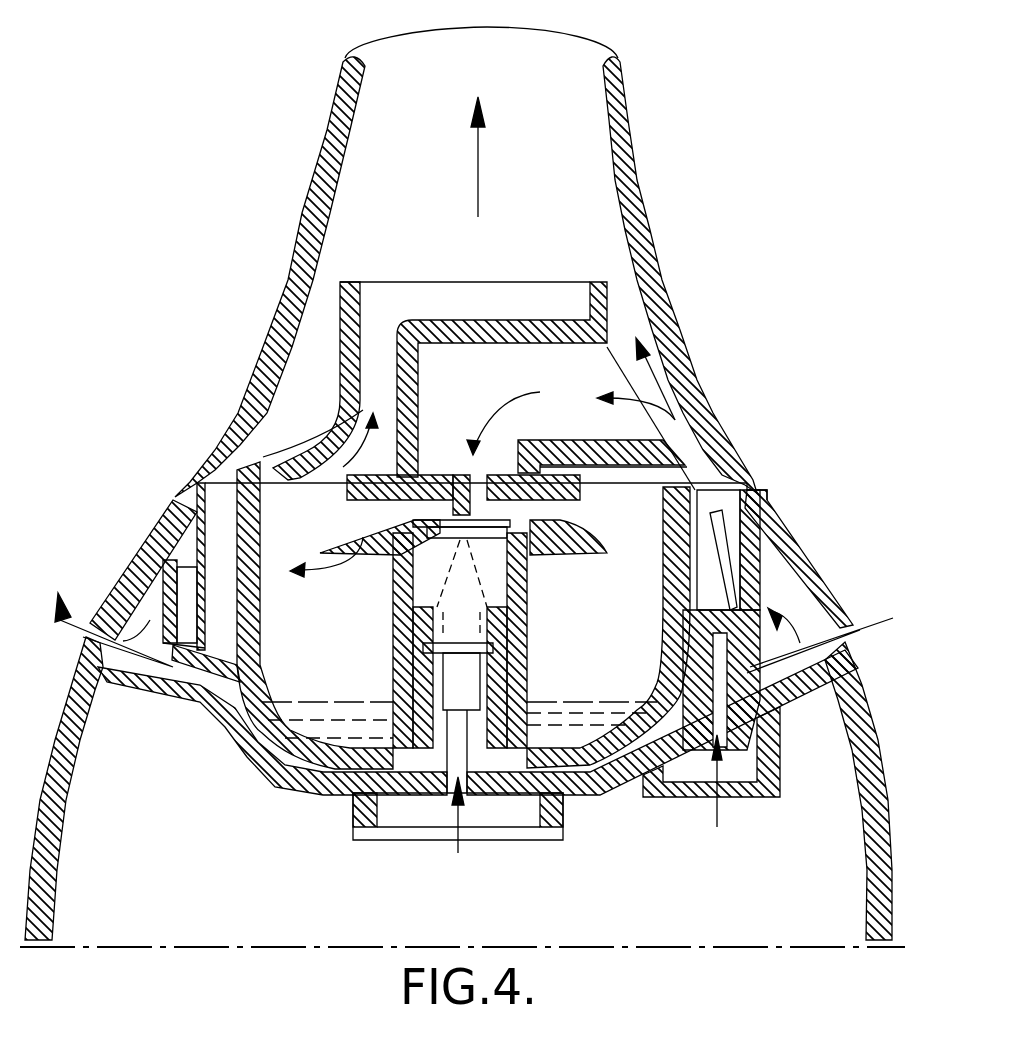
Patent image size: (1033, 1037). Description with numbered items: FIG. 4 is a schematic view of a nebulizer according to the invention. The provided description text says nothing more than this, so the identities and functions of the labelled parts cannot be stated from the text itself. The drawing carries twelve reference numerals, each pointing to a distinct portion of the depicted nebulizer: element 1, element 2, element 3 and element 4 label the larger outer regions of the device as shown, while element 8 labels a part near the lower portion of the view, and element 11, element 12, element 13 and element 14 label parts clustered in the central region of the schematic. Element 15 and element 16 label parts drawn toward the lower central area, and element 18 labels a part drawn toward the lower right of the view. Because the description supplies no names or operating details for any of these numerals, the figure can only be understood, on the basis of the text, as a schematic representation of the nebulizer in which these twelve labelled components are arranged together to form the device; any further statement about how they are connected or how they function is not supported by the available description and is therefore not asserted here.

The cap 1 is at (637, 210).
The outlet flow direction 2 is at (482, 180).
The skirt 3 is at (797, 540).
The container body 4 is at (867, 770).
The inlet 8 is at (433, 793).
The central tube 11 is at (497, 670).
The valve disc 12 is at (543, 567).
The nozzle insert 13 is at (450, 490).
The lip 14 is at (320, 480).
The cup 15 is at (305, 742).
The base plate 16 is at (597, 790).
The air passage 18 is at (711, 734).